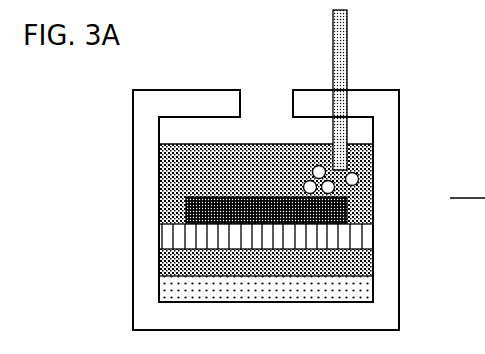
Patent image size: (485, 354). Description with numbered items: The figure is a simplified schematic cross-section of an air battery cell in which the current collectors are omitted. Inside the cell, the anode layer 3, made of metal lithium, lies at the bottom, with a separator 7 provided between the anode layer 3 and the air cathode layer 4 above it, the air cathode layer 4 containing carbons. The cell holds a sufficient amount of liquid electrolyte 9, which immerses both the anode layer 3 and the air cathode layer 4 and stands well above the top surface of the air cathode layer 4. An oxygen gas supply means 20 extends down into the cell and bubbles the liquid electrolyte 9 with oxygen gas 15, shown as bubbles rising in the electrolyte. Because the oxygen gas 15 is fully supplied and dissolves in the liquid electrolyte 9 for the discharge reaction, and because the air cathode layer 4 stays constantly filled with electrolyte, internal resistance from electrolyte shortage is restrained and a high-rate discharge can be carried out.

The oxygen gas supply means 20 is at (340, 33).
The oxygen gas 15 is at (358, 176).
The liquid electrolyte 9 is at (350, 190).
The air cathode layer 4 is at (347, 210).
The separator 7 is at (352, 236).
The anode layer 3 is at (350, 292).